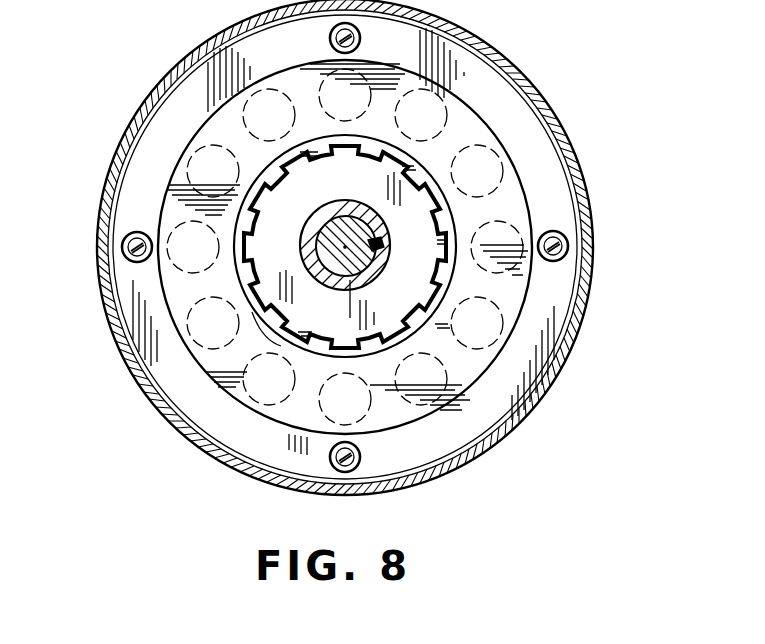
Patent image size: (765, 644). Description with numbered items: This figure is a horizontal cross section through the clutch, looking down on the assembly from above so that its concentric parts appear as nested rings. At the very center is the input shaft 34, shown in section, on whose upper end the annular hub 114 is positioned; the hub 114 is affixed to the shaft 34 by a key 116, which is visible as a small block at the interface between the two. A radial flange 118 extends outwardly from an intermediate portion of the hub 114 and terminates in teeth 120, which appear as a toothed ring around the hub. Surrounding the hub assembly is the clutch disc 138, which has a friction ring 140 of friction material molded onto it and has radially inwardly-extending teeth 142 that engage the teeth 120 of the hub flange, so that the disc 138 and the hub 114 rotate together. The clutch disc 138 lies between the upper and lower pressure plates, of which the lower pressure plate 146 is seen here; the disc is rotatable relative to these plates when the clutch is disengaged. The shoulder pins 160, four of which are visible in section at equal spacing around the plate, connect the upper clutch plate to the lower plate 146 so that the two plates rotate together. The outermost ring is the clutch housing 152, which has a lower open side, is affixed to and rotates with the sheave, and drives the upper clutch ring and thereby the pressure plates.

The input shaft 34 is at (301, 278).
The annular hub 114 is at (385, 283).
The key 116 is at (382, 242).
The radial flange 118 is at (376, 193).
The teeth 120 is at (282, 324).
The clutch disc 138 is at (163, 179).
The friction ring 140 is at (205, 116).
The radially inwardly-extending teeth 142 is at (256, 263).
The lower pressure plate 146 is at (148, 381).
The clutch housing 152 is at (210, 435).
The shoulder pins 160 is at (130, 258).